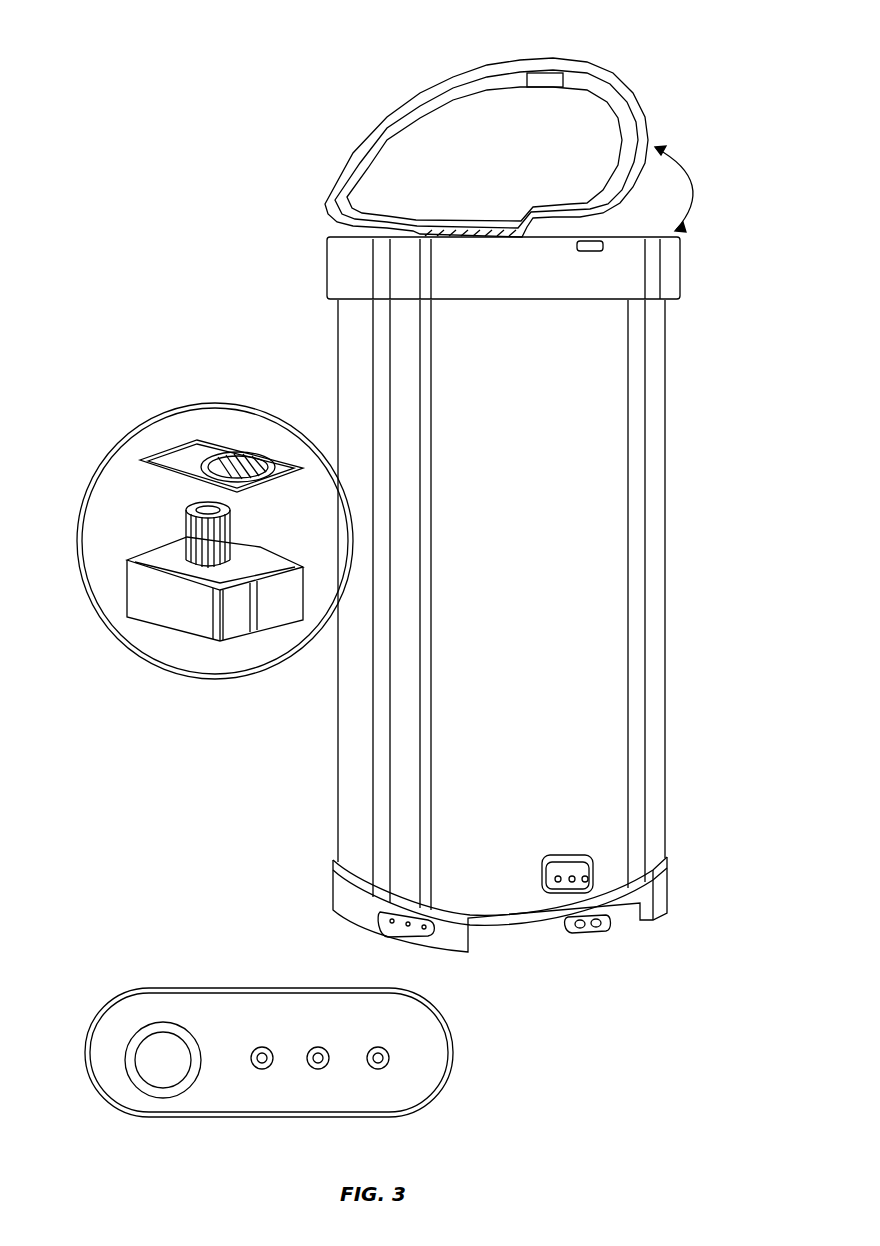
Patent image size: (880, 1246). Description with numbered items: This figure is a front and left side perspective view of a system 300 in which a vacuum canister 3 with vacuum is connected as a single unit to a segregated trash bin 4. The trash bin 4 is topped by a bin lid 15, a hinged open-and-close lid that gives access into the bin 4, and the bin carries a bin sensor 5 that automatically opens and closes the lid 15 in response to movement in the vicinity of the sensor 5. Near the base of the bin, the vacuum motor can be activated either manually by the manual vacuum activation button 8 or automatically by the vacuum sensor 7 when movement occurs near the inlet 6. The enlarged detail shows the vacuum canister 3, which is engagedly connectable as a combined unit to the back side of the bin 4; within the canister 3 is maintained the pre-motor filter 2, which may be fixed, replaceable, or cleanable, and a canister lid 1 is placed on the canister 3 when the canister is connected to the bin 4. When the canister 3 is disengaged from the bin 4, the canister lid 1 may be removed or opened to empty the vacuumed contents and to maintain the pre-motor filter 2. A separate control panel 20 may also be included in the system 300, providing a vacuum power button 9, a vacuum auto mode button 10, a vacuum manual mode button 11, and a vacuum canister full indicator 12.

The system 300 is at (254, 88).
The bin lid 15 is at (464, 72).
The bin sensor 5 is at (622, 234).
The segregated trash bin 4 is at (663, 541).
The manual vacuum activation button 8 is at (596, 881).
The vacuum sensor 7 is at (606, 935).
The inlet 6 is at (553, 920).
The canister lid 1 is at (232, 446).
The pre-motor filter 2 is at (172, 525).
The vacuum canister 3 is at (127, 587).
The control panel 20 is at (178, 990).
The vacuum power button 9 is at (163, 1098).
The vacuum auto mode button 10 is at (262, 1068).
The vacuum manual mode button 11 is at (318, 1068).
The vacuum canister full indicator 12 is at (378, 1068).